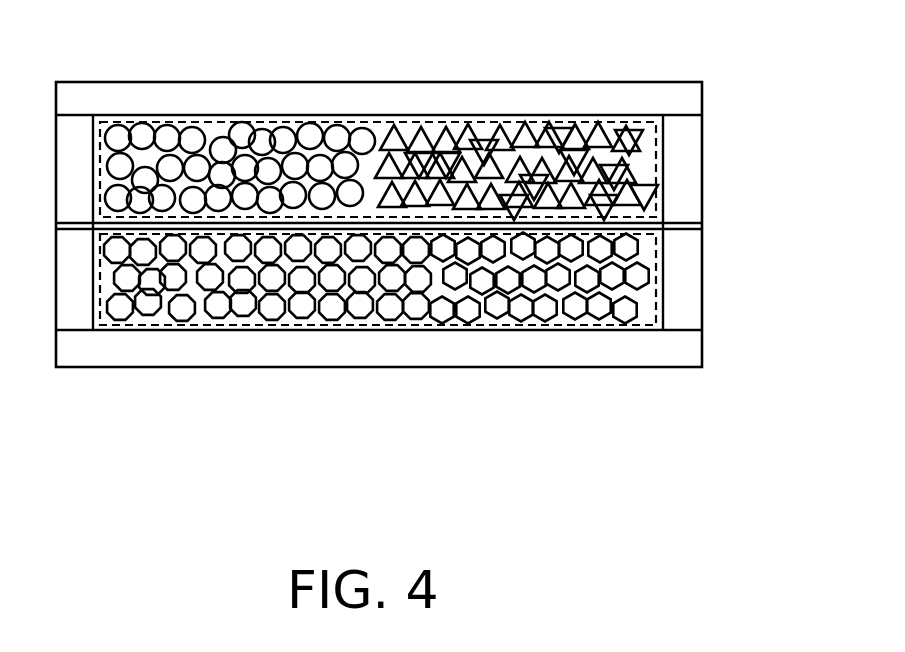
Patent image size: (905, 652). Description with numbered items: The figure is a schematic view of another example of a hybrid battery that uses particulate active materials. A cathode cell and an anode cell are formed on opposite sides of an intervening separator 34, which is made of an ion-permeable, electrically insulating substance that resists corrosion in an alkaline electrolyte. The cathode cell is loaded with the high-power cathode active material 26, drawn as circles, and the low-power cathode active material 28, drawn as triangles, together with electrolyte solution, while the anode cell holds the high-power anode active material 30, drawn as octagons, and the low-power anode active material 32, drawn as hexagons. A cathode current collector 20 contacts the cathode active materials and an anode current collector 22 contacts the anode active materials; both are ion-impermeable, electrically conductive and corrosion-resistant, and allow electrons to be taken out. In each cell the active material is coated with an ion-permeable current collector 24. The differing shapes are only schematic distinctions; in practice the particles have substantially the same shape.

The cathode current collector 20 is at (205, 82).
The anode current collector 22 is at (563, 367).
The ion-permeable current collector 24 is at (663, 147).
The high-power cathode active material 26 is at (285, 138).
The low-power cathode active material 28 is at (520, 138).
The high-power anode active material 30 is at (267, 305).
The low-power anode active material 32 is at (512, 305).
The separator 34 is at (692, 223).